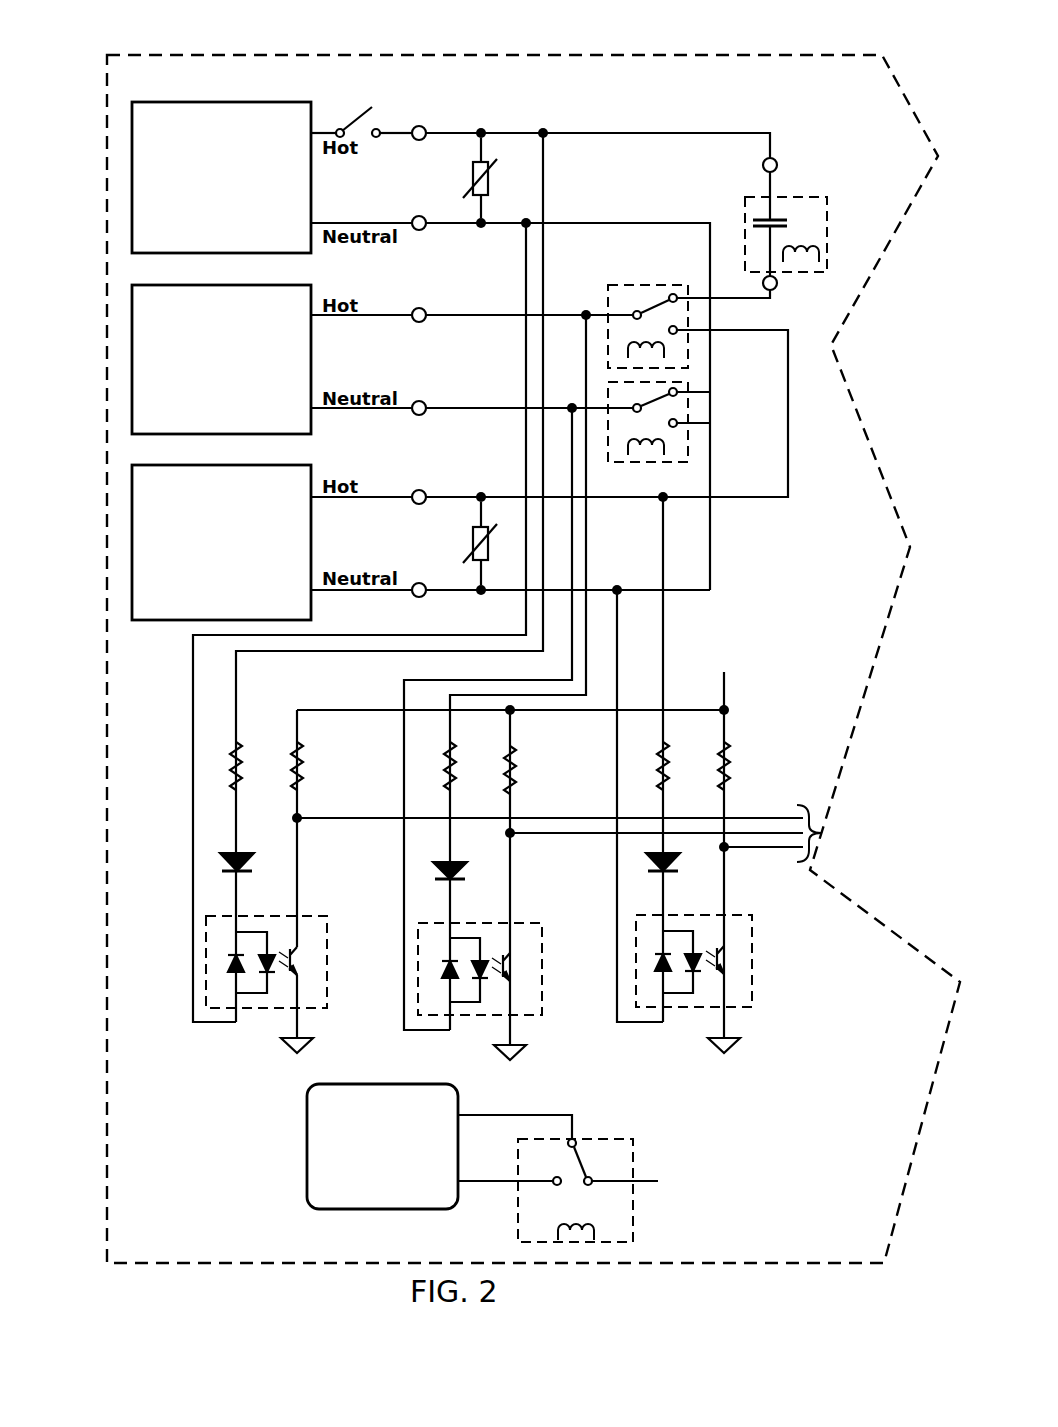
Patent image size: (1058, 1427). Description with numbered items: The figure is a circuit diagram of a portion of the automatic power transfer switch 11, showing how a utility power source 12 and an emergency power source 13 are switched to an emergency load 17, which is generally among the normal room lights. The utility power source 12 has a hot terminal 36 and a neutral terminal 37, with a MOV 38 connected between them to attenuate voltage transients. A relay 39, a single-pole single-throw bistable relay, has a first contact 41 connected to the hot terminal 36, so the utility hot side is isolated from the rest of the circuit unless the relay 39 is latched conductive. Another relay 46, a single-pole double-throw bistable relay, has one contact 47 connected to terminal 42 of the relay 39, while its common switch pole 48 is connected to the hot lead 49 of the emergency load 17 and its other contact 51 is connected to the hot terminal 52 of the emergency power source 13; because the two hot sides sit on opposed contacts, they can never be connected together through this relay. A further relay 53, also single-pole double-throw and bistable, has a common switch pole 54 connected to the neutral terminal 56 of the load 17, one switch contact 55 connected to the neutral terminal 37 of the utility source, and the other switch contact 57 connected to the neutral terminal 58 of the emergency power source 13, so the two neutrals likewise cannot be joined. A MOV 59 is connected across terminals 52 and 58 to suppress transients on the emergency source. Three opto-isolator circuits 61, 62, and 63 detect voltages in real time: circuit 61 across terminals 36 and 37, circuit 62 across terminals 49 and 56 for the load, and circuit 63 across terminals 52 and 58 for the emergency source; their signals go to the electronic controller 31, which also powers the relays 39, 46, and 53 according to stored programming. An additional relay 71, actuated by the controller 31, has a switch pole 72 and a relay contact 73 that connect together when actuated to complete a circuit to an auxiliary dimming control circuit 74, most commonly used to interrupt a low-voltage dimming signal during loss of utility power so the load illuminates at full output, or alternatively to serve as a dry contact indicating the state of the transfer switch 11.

The transfer switch 11 is at (645, 93).
The utility power source 12 is at (152, 162).
The emergency power source 13 is at (152, 575).
The emergency load 17 is at (152, 350).
The electronic controller 31 is at (869, 843).
The hot terminal 36 is at (421, 125).
The neutral terminal 37 is at (424, 231).
The MOV 38 is at (463, 181).
The relay 39 is at (805, 197).
The first contact 41 is at (764, 160).
The terminal 42 is at (777, 288).
The relay 46 is at (630, 283).
The contact 47 is at (672, 292).
The common switch pole 48 is at (632, 310).
The hot lead 49 is at (424, 310).
The other contact 51 is at (678, 335).
The hot terminal 52 is at (422, 492).
The relay 53 is at (683, 465).
The common switch pole 54 is at (633, 403).
The switch contact 55 is at (678, 396).
The neutral terminal 56 is at (424, 402).
The other switch contact 57 is at (678, 426).
The neutral terminal 58 is at (419, 583).
The MOV 59 is at (465, 536).
The opto-isolator circuit 61 is at (308, 916).
The opto-isolator circuit 62 is at (522, 923).
The opto-isolator circuit 63 is at (755, 998).
The relay 71 is at (634, 1168).
The switch pole 72 is at (580, 1142).
The relay contact 73 is at (568, 1148).
The auxiliary dimming control circuit 74 is at (307, 1178).